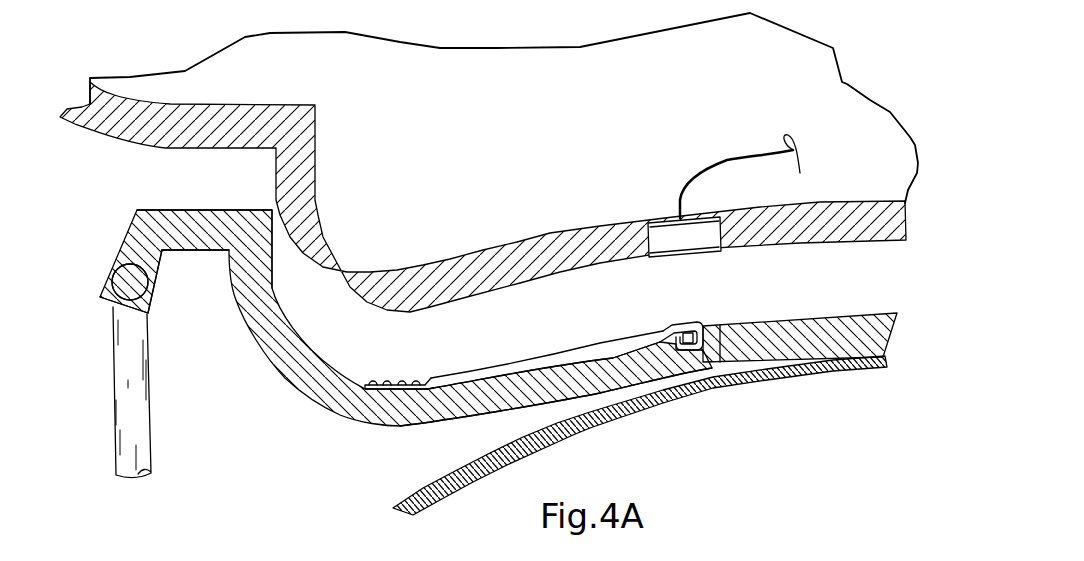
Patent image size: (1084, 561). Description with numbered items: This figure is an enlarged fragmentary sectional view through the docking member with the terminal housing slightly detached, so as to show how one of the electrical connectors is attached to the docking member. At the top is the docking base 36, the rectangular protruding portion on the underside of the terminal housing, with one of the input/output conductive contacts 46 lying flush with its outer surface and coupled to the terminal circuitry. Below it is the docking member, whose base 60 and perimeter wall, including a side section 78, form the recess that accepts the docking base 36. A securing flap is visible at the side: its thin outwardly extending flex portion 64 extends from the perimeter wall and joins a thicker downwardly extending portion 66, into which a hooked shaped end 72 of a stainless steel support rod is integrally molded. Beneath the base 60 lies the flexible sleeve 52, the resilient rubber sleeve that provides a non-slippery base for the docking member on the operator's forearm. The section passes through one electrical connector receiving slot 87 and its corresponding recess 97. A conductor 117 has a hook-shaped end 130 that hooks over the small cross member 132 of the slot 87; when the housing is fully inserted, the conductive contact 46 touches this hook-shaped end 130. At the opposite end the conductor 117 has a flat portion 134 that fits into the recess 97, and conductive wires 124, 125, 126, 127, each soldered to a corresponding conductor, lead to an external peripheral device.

The docking base 36 is at (553, 249).
The input/output conductive contacts 46 is at (683, 258).
The flexible sleeve 52 is at (567, 438).
The base 60 is at (790, 314).
The outwardly extending flex portion 64 is at (205, 210).
The downwardly extending portion 66 is at (123, 241).
The hooked shaped end 72 is at (140, 421).
The side section 78 is at (231, 299).
The electrical connector receiving slot 87 is at (630, 320).
The recess 97 is at (399, 394).
The conductor 117 is at (519, 363).
The conductive wire 124 is at (416, 380).
The conductive wire 125 is at (402, 380).
The conductive wire 126 is at (387, 380).
The conductive wire 127 is at (373, 380).
The hook-shaped end 130 is at (684, 324).
The cross member 132 is at (685, 333).
The flat portion 134 is at (385, 392).